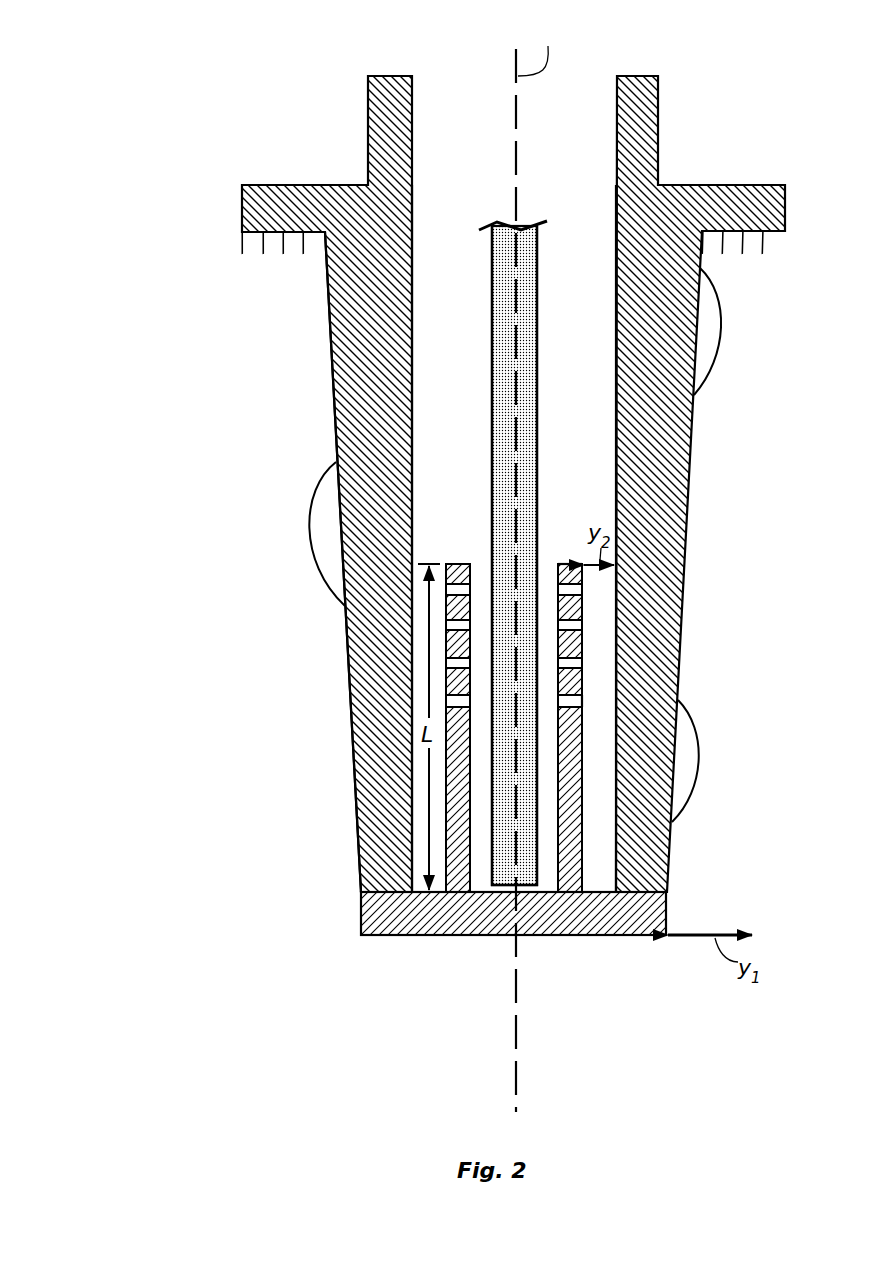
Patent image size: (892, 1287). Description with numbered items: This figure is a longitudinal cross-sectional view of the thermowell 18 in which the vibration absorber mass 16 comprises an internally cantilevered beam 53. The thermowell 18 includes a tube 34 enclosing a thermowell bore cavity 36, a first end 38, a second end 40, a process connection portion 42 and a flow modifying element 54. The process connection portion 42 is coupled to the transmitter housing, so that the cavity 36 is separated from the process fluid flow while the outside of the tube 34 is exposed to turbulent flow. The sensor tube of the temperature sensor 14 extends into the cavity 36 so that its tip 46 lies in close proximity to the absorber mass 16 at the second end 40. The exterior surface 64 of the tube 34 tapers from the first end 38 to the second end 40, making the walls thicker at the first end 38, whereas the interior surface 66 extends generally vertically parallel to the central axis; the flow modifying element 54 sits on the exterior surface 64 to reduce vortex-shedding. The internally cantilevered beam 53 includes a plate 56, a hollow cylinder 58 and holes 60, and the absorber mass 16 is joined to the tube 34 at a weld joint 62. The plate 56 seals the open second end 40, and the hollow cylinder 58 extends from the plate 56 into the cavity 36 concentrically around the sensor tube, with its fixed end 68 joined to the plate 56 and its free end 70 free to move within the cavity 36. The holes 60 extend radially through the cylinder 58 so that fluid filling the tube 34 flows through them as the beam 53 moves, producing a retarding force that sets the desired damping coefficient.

The temperature sensor 14 is at (488, 220).
The vibration absorber mass 16 is at (618, 944).
The thermowell 18 is at (703, 400).
The tube 34 is at (655, 515).
The thermowell bore cavity 36 is at (588, 485).
The first end 38 is at (214, 184).
The second end 40 is at (518, 311).
The process connection portion 42 is at (644, 143).
The tip 46 is at (491, 873).
The internally cantilevered beam 53 is at (594, 701).
The flow modifying element 54 is at (710, 306).
The plate 56 is at (397, 921).
The hollow cylinder 58 is at (472, 564).
The holes 60 is at (590, 590).
The weld joint 62 is at (365, 890).
The exterior surface 64 is at (329, 354).
The interior surface 66 is at (412, 353).
The fixed end 68 is at (582, 888).
The free end 70 is at (568, 564).